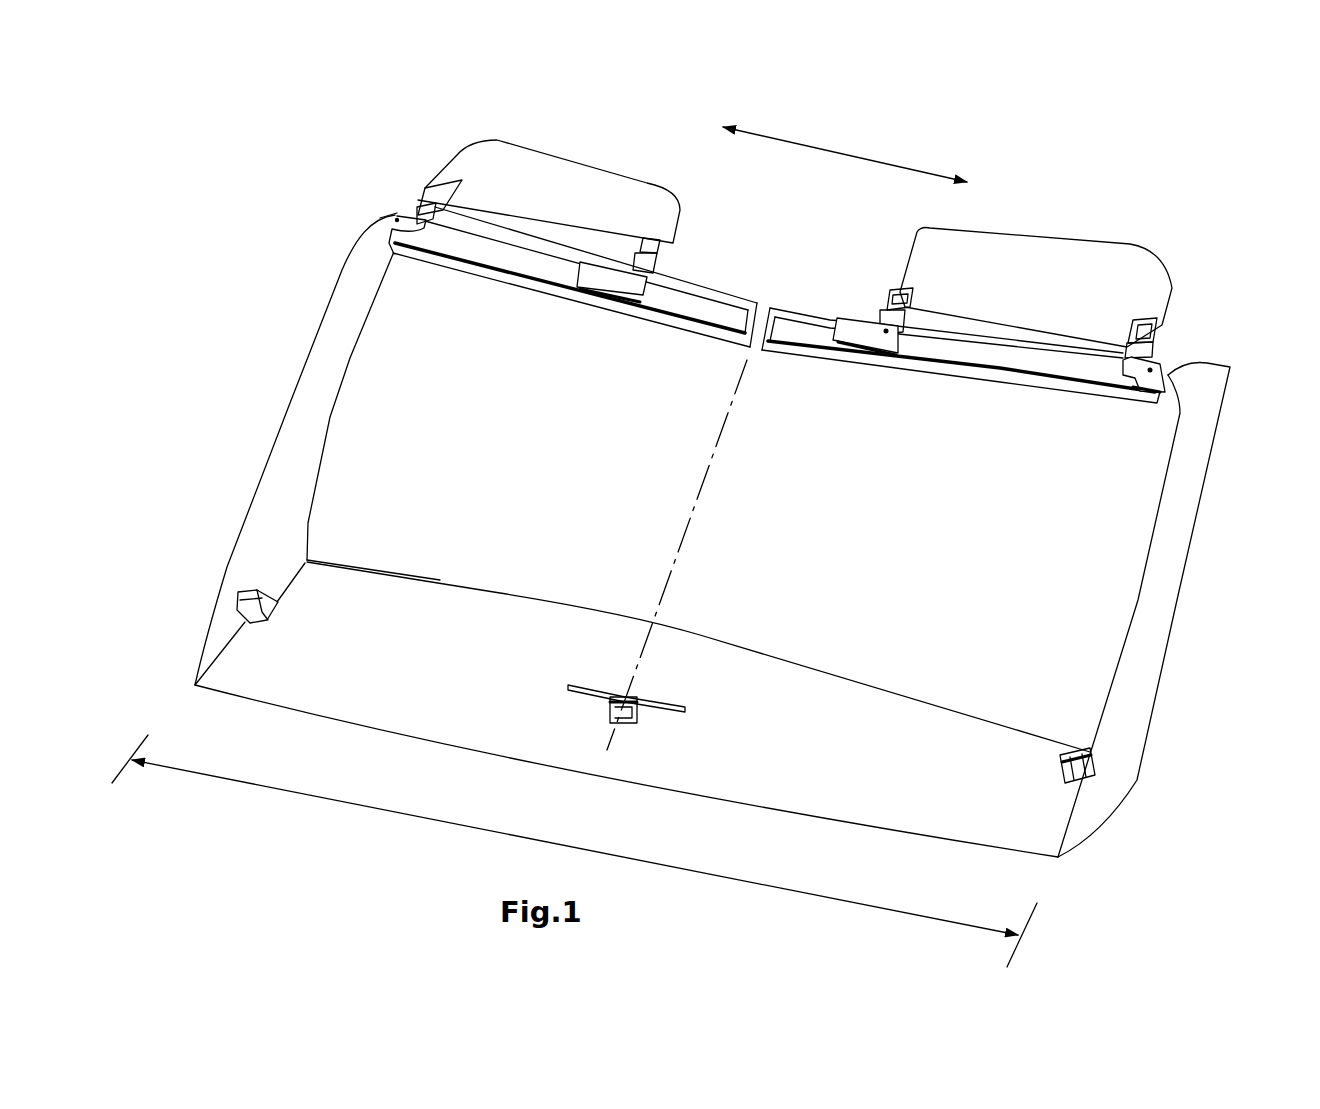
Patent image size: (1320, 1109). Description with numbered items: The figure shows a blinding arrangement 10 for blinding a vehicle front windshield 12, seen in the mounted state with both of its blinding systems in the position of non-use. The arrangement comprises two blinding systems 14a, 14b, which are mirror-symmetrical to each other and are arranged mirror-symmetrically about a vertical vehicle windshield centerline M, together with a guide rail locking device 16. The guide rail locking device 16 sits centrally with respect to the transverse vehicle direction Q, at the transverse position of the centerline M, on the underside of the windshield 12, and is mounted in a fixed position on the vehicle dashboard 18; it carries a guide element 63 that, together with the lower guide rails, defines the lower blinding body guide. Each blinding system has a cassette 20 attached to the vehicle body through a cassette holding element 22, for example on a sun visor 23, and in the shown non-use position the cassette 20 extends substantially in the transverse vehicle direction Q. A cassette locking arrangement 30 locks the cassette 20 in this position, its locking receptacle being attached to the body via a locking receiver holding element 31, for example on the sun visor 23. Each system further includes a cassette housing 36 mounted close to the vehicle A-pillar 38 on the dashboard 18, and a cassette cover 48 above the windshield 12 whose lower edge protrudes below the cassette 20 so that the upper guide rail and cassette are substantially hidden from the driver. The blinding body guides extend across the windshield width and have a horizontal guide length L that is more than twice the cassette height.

The blinding arrangement 10 is at (293, 165).
The vehicle front windshield 12 is at (687, 535).
The blinding system 14a is at (991, 341).
The blinding system 14b is at (545, 313).
The guide rail locking device 16 is at (625, 684).
The vehicle dashboard 18 is at (797, 712).
The cassette 20 is at (991, 374).
The cassette holding element 22 is at (1153, 368).
The sun visor 23 is at (1103, 273).
The cassette locking arrangement 30 is at (853, 310).
The locking receiver holding element 31 is at (910, 305).
The cassette housing 36 is at (1078, 750).
The vehicle A-pillar 38 is at (1152, 655).
The cassette cover 48 is at (1058, 387).
The guide element 63 is at (657, 712).
The vertical vehicle windshield centerline M is at (712, 472).
The transverse vehicle direction Q is at (840, 150).
The horizontal guide length L is at (340, 802).